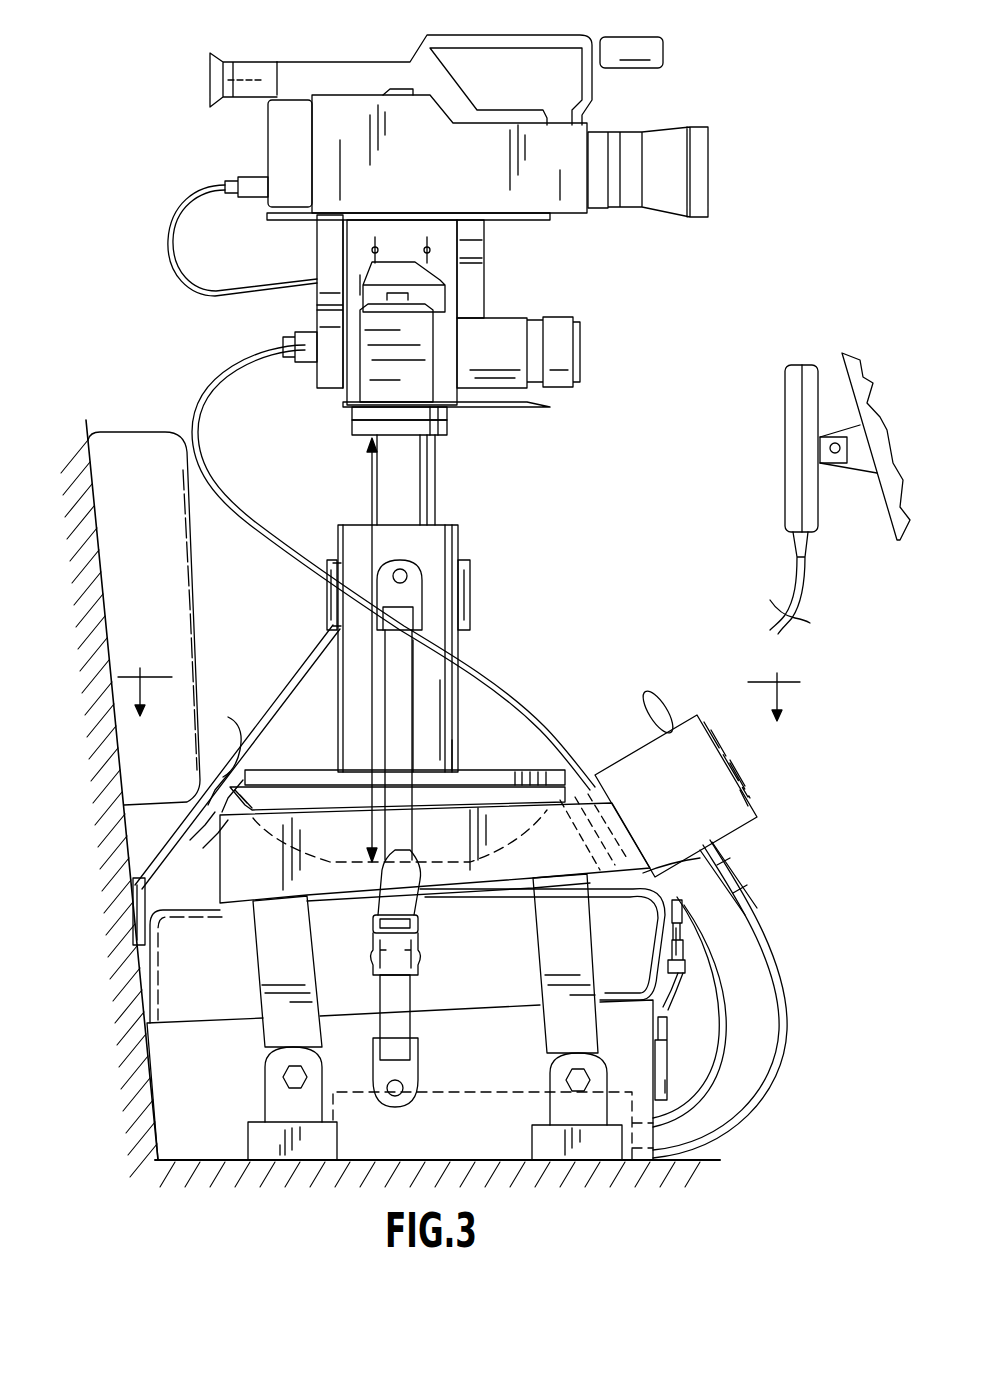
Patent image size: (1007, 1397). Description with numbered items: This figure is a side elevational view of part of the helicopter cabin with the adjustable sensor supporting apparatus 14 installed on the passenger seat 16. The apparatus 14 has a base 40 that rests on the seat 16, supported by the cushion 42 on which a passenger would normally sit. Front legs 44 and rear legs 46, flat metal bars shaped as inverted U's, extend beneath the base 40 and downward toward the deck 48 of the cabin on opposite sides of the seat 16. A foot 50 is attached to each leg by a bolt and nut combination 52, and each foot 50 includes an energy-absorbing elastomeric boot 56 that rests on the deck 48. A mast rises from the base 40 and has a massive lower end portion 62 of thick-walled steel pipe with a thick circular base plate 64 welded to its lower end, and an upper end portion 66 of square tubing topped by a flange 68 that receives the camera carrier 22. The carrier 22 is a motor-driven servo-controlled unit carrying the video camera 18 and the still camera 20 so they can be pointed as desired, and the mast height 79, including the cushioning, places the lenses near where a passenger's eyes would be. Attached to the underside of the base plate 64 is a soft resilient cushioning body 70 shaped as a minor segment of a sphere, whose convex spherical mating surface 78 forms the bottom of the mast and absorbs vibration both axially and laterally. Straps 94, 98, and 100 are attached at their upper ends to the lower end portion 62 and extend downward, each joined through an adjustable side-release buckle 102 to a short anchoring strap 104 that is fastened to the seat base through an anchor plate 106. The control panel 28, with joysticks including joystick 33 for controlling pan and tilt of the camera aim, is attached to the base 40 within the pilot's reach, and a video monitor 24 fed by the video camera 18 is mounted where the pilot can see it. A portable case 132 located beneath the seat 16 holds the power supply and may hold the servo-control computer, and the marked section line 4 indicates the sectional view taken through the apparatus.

The section line 4 is at (459, 679).
The adjustable sensor supporting apparatus 14 is at (505, 516).
The passenger seat 16 is at (149, 425).
The video camera 18 is at (348, 62).
The still camera 20 is at (518, 316).
The camera carrier 22 is at (317, 248).
The video monitor 24 is at (783, 420).
The control panel 28 is at (757, 783).
The joystick 33 is at (660, 694).
The base 40 is at (220, 860).
The cushion 42 is at (185, 1012).
The front legs 44 is at (588, 947).
The rear legs 46 is at (263, 966).
The deck 48 is at (433, 1160).
The foot 50 is at (268, 1098).
The bolt and nut combination 52 is at (283, 1077).
The boot 56 is at (250, 1138).
The lower end portion 62 is at (460, 549).
The base plate 64 is at (487, 772).
The upper end portion 66 is at (436, 482).
The flange 68 is at (447, 426).
The cushioning body 70 is at (315, 780).
The mating surface 78 is at (274, 805).
The height 79 is at (370, 501).
The strap 94 is at (385, 703).
The strap 98 is at (480, 668).
The strap 100 is at (293, 688).
The adjustable buckle 102 is at (418, 940).
The anchoring strap 104 is at (411, 992).
The anchor plate 106 is at (373, 1070).
The portable case 132 is at (478, 1090).